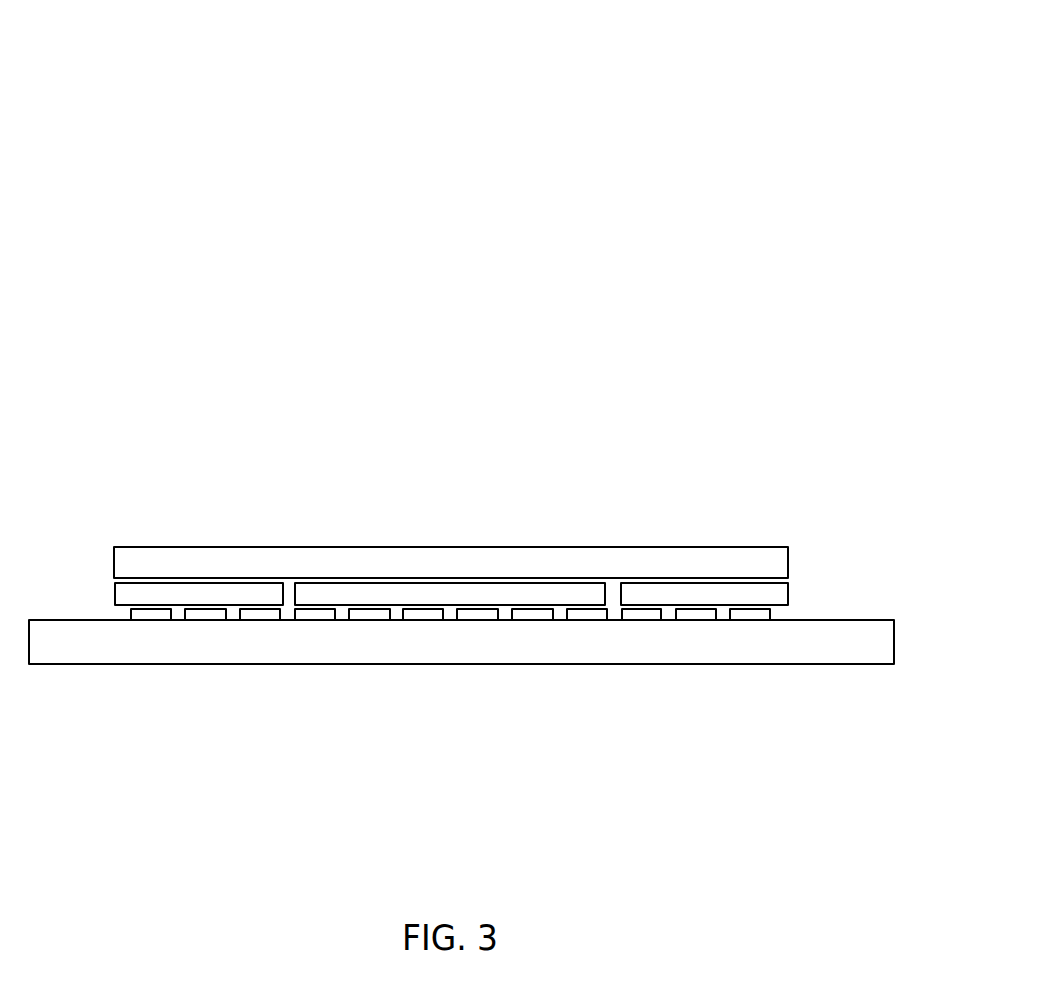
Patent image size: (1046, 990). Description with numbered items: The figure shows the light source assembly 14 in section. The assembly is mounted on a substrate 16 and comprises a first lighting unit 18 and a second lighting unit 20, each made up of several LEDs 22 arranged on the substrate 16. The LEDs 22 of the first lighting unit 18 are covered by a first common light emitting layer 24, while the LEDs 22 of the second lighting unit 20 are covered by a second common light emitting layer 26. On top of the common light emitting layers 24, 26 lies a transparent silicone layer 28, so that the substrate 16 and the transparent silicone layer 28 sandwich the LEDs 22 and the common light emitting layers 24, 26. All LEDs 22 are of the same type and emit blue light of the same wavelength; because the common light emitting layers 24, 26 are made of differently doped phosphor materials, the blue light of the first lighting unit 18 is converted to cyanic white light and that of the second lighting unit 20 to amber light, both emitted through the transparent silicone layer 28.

The light source assembly 14 is at (761, 157).
The substrate 16 is at (707, 645).
The first lighting unit 18 is at (195, 572).
The second lighting unit 20 is at (345, 568).
The LEDs 22 is at (638, 615).
The first common light emitting layer 24 is at (547, 597).
The second common light emitting layer 26 is at (127, 598).
The transparent silicone layer 28 is at (407, 562).